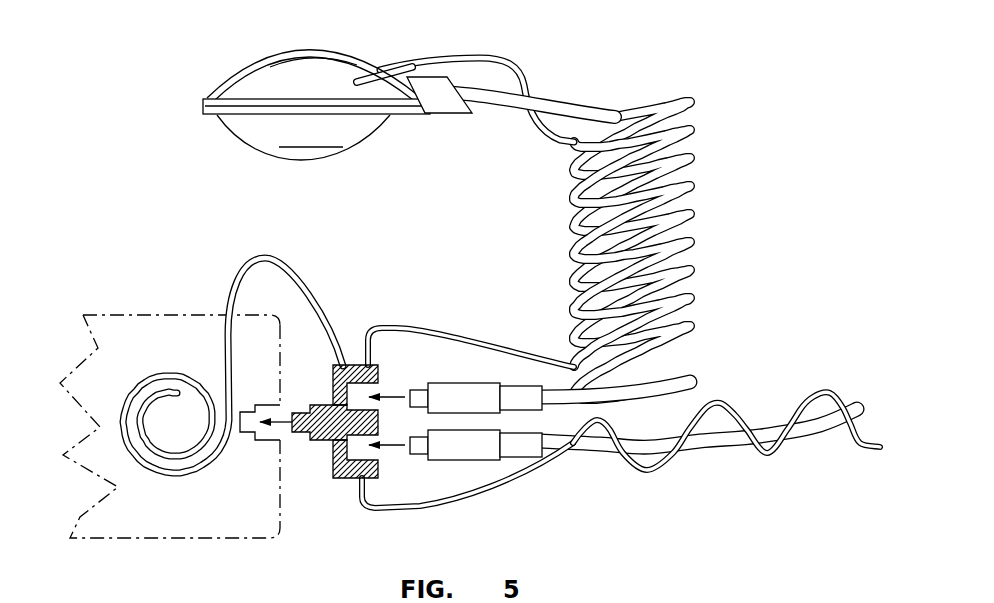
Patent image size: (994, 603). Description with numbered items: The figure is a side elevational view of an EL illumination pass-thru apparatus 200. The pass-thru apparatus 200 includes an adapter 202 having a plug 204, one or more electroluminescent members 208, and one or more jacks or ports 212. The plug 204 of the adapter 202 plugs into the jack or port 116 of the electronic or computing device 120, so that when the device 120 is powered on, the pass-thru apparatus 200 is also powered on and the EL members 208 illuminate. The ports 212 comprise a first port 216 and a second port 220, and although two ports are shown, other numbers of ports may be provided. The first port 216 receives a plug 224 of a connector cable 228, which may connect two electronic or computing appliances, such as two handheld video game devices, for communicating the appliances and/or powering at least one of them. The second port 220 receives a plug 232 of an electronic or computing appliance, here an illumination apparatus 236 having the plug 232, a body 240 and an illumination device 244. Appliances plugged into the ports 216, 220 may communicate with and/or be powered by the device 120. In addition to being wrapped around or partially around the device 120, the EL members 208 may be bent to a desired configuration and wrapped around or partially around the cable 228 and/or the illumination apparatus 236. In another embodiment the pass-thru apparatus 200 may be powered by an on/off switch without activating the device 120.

The jack or port 116 is at (290, 388).
The electronic or computing device 120 is at (153, 308).
The EL illumination pass-thru apparatus 200 is at (324, 394).
The adapter 202 is at (345, 490).
The plug 204 is at (300, 442).
The electroluminescent (EL) member 208 is at (526, 76).
The jacks or ports 212 is at (379, 346).
The first port 216 is at (380, 462).
The second port 220 is at (387, 385).
The plug 224 is at (516, 462).
The connector cable 228 is at (769, 418).
The plug 232 is at (487, 380).
The illumination apparatus 236 is at (737, 152).
The body 240 is at (683, 252).
The illumination device 244 is at (233, 68).